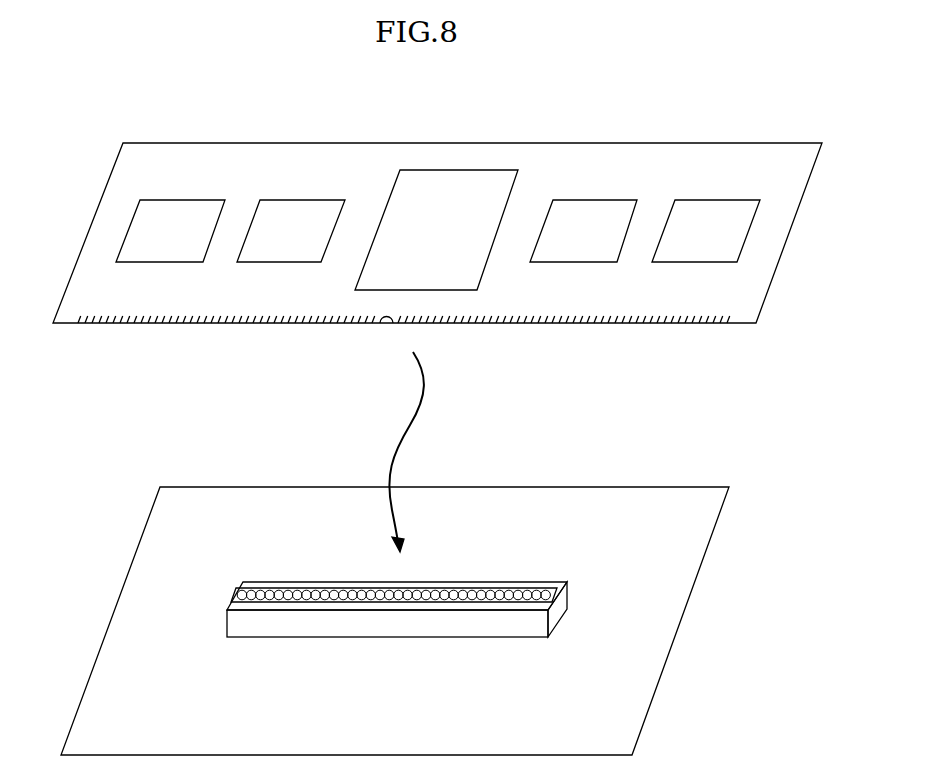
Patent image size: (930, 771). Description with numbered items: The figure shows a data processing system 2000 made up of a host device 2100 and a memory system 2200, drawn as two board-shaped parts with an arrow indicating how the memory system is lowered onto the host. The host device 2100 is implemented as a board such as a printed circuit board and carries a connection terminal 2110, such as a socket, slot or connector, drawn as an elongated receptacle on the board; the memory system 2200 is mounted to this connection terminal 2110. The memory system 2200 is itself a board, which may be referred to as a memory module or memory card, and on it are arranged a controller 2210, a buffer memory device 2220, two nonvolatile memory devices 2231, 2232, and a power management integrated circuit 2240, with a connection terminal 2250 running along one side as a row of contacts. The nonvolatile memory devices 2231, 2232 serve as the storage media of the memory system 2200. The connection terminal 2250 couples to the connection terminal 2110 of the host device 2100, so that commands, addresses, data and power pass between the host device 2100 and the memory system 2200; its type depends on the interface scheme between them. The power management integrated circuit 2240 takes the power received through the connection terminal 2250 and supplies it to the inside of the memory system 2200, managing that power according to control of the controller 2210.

The data processing system 2000 is at (93, 100).
The host device 2100 is at (395, 621).
The connection terminal 2110 is at (590, 573).
The memory system 2200 is at (437, 259).
The controller 2210 is at (436, 230).
The buffer memory device 2220 is at (291, 231).
The nonvolatile memory device 2231 is at (583, 231).
The nonvolatile memory device 2232 is at (706, 231).
The power management integrated circuit 2240 is at (170, 231).
The connection terminal 2250 is at (102, 325).